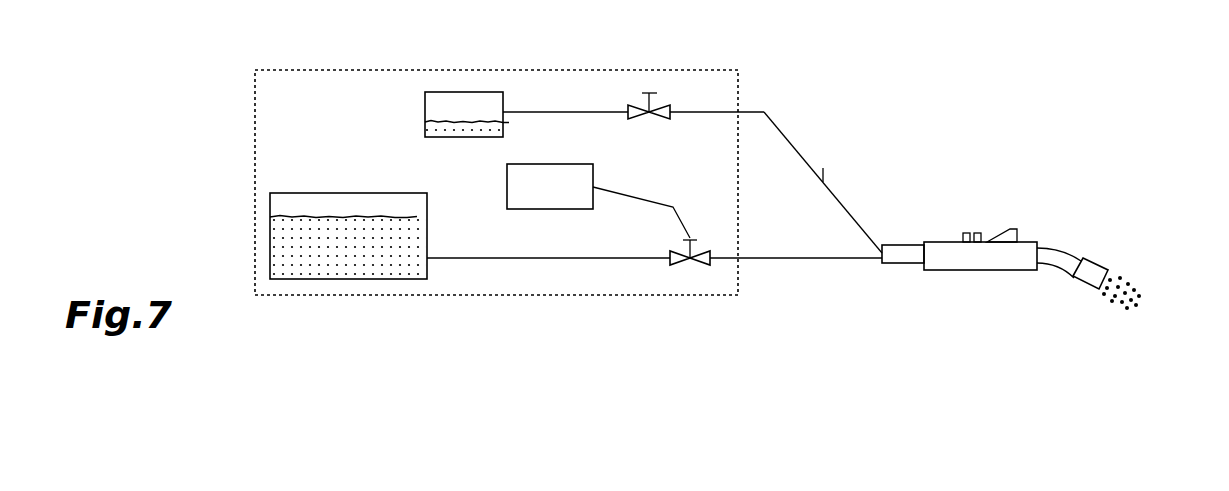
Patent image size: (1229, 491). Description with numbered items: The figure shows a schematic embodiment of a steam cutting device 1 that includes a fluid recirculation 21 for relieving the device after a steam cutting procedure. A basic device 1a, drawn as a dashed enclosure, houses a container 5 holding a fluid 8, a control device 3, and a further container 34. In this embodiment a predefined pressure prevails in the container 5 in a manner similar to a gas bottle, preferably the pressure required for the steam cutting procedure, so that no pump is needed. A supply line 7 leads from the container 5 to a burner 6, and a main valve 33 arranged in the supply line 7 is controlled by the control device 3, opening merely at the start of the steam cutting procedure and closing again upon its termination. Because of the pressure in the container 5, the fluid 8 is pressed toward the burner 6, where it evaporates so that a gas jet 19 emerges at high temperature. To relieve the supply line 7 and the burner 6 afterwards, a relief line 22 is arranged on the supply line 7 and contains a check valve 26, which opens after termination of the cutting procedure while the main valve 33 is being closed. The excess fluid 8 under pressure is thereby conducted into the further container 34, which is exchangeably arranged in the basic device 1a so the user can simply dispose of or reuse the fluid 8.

The steam cutting device 1 is at (210, 108).
The basic device 1a is at (753, 83).
The fluid recirculation 21 is at (313, 92).
The further container 34 is at (408, 95).
The fluid 8 is at (462, 127).
The container 5 is at (304, 288).
The control device 3 is at (540, 187).
The check valve 26 is at (628, 93).
The relief line 22 is at (826, 176).
The supply line 7 is at (571, 260).
The main valve 33 is at (685, 270).
The burner 6 is at (967, 293).
The gas jet 19 is at (1137, 275).